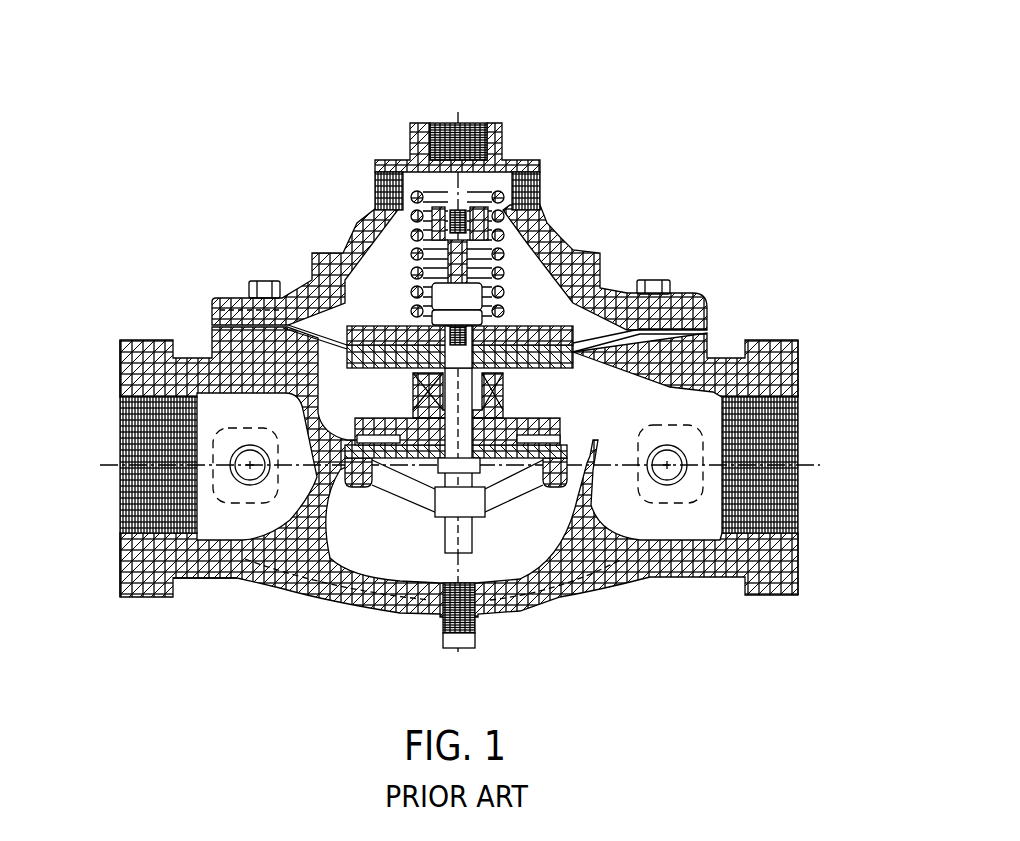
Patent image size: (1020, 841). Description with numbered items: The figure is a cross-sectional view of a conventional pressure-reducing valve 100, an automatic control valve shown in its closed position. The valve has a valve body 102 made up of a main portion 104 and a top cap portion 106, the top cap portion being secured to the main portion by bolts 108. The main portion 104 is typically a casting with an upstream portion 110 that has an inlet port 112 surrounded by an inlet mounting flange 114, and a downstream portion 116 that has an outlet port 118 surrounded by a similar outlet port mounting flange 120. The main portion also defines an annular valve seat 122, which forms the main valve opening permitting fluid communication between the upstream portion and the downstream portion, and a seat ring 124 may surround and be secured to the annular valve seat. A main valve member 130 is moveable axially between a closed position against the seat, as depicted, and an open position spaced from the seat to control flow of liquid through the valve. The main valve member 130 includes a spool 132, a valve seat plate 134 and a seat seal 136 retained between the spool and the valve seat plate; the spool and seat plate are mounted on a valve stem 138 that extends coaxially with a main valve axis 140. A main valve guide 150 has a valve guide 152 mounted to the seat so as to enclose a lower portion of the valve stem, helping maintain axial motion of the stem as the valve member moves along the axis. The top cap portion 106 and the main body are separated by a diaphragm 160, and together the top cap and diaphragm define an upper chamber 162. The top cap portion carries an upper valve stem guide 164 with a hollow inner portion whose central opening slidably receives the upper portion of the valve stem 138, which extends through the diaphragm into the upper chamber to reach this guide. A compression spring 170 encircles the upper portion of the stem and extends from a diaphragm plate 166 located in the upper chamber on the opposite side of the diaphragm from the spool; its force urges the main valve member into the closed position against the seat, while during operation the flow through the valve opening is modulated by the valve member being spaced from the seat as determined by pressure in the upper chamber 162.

The pressure-reducing valve 100 is at (735, 78).
The valve body 102 is at (593, 583).
The main portion 104 is at (287, 593).
The top cap portion 106 is at (603, 262).
The bolts 108 is at (247, 286).
The upstream portion 110 is at (241, 578).
The inlet port 112 is at (118, 487).
The inlet mounting flange 114 is at (150, 593).
The downstream portion 116 is at (672, 421).
The outlet port 118 is at (807, 443).
The outlet port mounting flange 120 is at (780, 338).
The annular valve seat 122 is at (330, 480).
The seat ring 124 is at (567, 460).
The main valve member 130 is at (390, 418).
The spool 132 is at (545, 363).
The valve seat plate 134 is at (485, 468).
The seat seal 136 is at (312, 420).
The valve stem 138 is at (455, 366).
The main valve axis 140 is at (486, 605).
The main valve guide 150 is at (400, 493).
The valve guide 152 is at (437, 517).
The diaphragm 160 is at (213, 327).
The upper chamber 162 is at (520, 226).
The upper valve stem guide 164 is at (528, 178).
The diaphragm plate 166 is at (510, 335).
The compression spring 170 is at (411, 233).